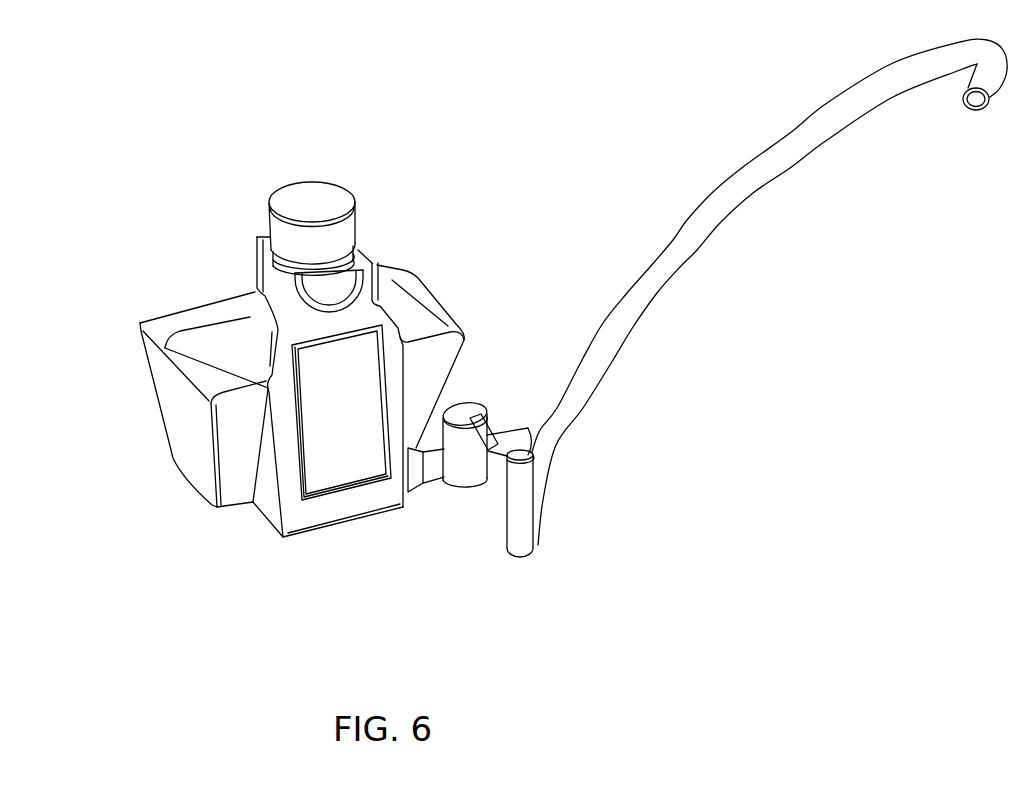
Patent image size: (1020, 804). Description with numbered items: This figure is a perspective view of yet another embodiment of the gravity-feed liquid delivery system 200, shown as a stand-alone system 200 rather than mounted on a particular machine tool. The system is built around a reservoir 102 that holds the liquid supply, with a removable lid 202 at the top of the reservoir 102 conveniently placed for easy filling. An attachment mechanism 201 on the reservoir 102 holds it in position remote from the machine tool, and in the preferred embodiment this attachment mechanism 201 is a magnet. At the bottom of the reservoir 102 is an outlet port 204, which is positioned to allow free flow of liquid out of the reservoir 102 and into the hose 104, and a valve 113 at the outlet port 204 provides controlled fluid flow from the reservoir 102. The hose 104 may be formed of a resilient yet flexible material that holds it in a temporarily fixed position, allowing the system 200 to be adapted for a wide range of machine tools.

The gravity-feed liquid delivery system 200 is at (479, 112).
The reservoir 102 is at (171, 301).
The removable lid 202 is at (311, 186).
The attachment mechanism 201 is at (324, 452).
The outlet port 204 is at (415, 507).
The valve 113 is at (477, 400).
The hose 104 is at (710, 245).